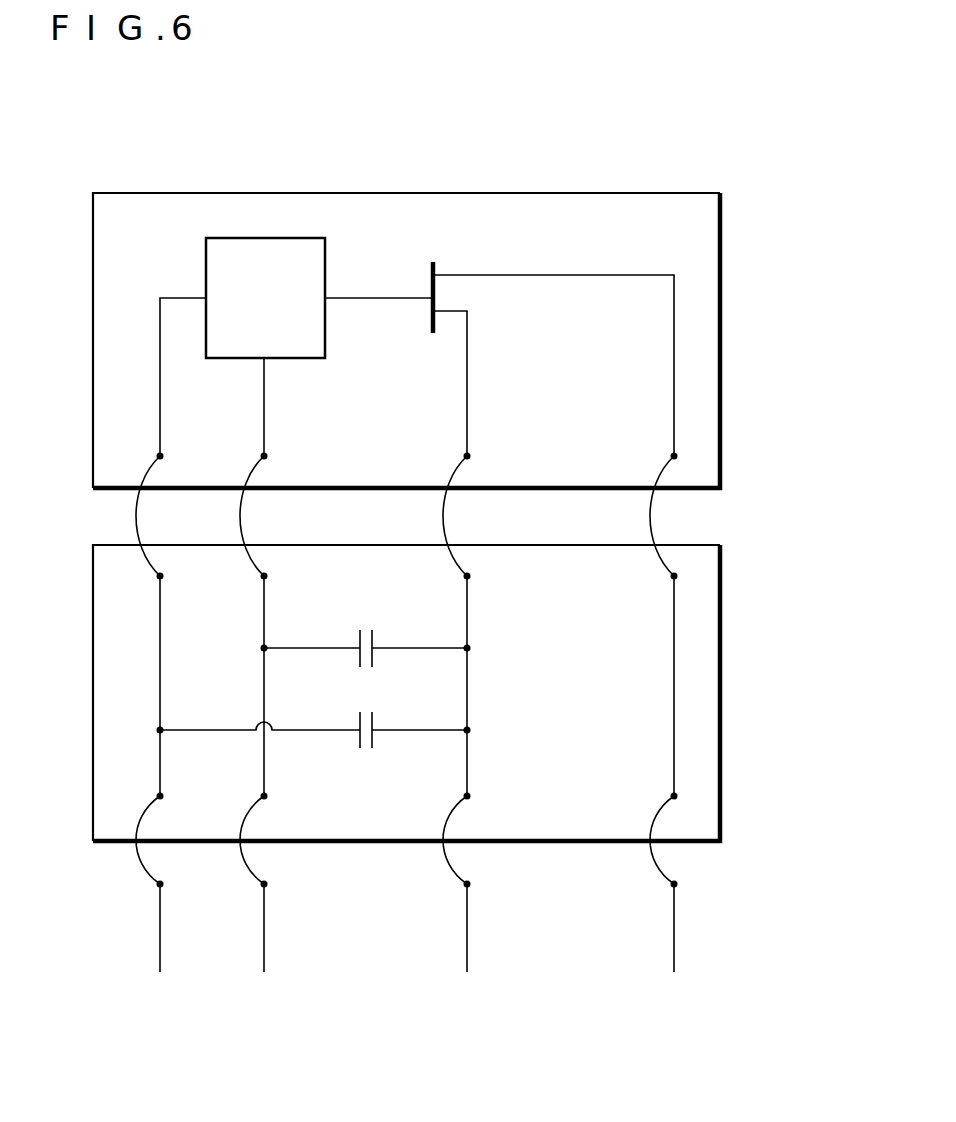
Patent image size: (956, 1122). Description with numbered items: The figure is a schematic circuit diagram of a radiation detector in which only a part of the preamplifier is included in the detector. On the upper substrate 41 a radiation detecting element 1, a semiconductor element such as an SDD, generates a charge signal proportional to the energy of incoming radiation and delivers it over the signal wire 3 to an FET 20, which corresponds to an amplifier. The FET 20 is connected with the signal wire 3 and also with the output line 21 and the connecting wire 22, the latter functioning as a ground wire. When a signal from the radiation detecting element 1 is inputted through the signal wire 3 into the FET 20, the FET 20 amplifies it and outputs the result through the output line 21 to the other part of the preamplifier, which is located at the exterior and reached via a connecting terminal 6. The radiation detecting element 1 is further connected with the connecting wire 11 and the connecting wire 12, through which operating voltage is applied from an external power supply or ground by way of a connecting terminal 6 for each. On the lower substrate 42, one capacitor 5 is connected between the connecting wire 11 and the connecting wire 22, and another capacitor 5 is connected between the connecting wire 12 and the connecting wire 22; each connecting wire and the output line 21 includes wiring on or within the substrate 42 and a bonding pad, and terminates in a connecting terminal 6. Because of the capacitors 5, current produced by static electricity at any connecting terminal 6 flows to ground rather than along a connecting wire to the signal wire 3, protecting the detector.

The radiation detecting element 1 is at (268, 252).
The signal wire 3 is at (393, 297).
The FET 20 is at (436, 285).
The output line 21 is at (674, 372).
The connecting wire 22 is at (467, 410).
The connecting wire 11 is at (264, 410).
The connecting wire 12 is at (160, 410).
The capacitor 5 is at (367, 628).
The connecting terminal 6 is at (160, 942).
The substrate 41 is at (706, 241).
The substrate 42 is at (708, 643).